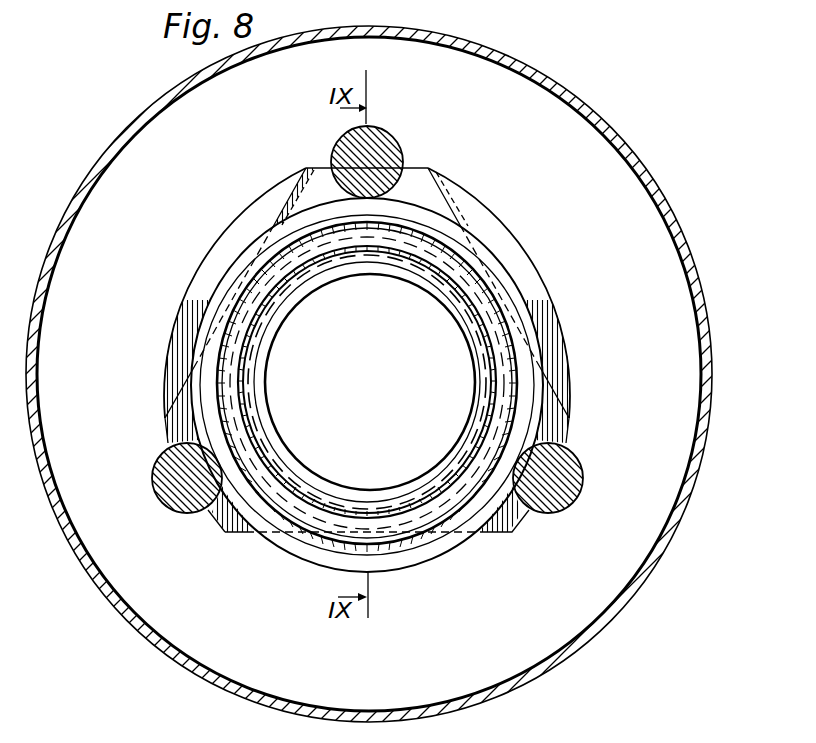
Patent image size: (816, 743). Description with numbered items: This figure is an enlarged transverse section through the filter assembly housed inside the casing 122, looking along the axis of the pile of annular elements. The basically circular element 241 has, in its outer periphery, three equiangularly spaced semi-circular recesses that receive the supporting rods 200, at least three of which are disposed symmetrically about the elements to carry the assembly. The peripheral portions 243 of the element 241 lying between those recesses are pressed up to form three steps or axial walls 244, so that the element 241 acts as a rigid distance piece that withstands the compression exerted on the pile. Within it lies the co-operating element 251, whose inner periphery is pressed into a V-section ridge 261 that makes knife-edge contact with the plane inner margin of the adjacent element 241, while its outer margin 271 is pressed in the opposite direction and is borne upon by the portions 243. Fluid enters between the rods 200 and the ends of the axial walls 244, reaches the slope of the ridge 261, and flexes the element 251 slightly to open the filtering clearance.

The casing 122 is at (151, 628).
The supporting rods 200 is at (382, 157).
The annular filter element 241 is at (495, 512).
The peripheral portions 243 is at (208, 268).
The steps or axial walls 244 is at (298, 178).
The co-operating filter element 251 is at (362, 510).
The V-section ridge 261 is at (293, 467).
The outer margin 271 is at (289, 516).